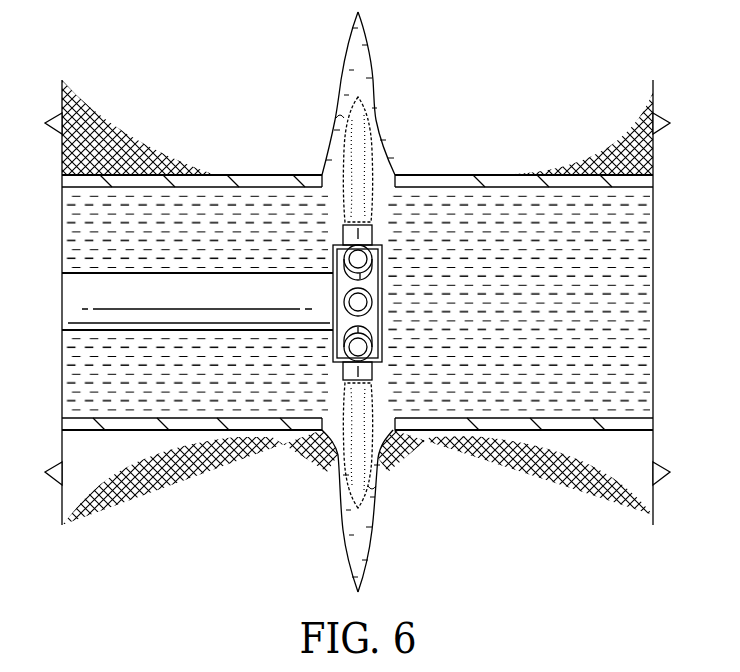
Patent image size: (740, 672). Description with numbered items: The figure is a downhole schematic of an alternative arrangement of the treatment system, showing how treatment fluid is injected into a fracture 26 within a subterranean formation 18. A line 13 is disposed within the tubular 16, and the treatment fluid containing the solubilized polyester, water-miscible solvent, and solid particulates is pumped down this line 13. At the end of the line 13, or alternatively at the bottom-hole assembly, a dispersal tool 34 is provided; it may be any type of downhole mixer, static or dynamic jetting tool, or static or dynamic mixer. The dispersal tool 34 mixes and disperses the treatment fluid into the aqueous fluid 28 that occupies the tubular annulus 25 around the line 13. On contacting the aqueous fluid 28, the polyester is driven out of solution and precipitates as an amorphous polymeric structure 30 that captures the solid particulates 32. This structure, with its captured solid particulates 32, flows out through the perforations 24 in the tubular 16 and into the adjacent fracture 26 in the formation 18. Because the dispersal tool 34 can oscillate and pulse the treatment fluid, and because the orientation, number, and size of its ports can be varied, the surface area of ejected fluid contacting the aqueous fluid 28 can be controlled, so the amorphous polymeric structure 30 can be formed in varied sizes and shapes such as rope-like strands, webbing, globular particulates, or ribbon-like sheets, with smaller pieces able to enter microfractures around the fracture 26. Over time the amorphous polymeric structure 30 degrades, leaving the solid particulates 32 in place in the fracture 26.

The line 13 is at (112, 279).
The tubular 16 is at (252, 182).
The subterranean formation 18 is at (538, 492).
The perforations 24 is at (322, 181).
The tubular annulus 25 is at (437, 193).
The fracture 26 is at (345, 77).
The aqueous fluid 28 is at (650, 306).
The amorphous polymeric structure 30 is at (338, 118).
The solid particulates 32 is at (366, 116).
The dispersal tool 34 is at (373, 320).